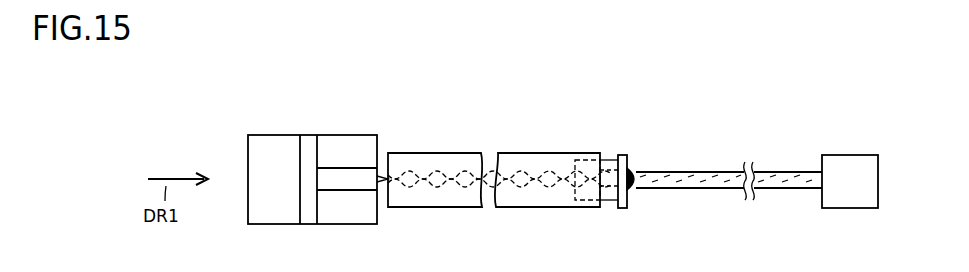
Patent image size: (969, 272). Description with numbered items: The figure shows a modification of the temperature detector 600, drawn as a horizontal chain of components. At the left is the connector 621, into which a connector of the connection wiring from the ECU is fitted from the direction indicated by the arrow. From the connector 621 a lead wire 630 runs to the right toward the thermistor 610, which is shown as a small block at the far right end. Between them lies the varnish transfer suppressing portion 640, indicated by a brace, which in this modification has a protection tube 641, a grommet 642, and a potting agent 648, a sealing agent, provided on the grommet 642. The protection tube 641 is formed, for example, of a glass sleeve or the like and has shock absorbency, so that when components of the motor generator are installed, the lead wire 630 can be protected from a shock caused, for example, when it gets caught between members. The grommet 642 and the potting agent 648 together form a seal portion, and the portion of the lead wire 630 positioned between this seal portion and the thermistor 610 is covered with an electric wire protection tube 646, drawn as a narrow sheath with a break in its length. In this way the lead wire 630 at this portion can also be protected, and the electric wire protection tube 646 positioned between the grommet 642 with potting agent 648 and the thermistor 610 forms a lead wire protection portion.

The temperature detector 600 is at (786, 125).
The thermistor 610 is at (848, 193).
The connector 621 is at (275, 155).
The lead wire 630 is at (535, 186).
The varnish transfer suppressing portion 640 is at (672, 99).
The protection tube 641 is at (444, 166).
The grommet 642 is at (622, 157).
The electric wire protection tube 646 is at (703, 190).
The potting agent 648 is at (630, 167).